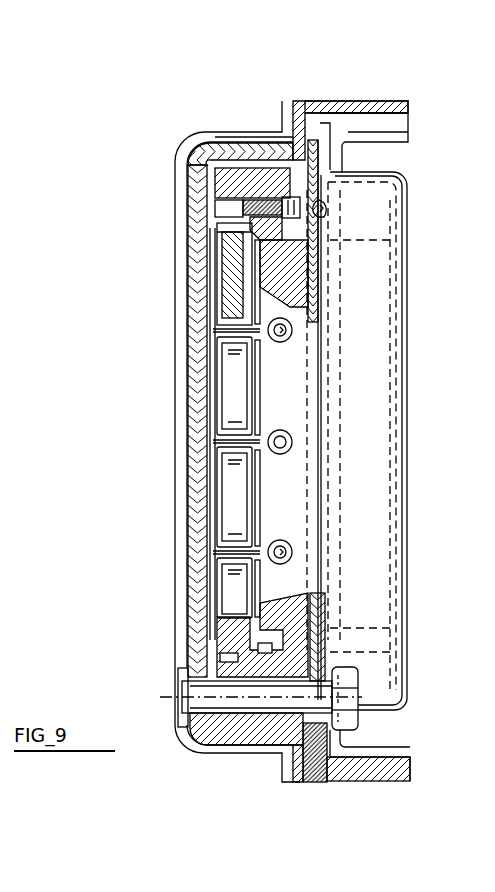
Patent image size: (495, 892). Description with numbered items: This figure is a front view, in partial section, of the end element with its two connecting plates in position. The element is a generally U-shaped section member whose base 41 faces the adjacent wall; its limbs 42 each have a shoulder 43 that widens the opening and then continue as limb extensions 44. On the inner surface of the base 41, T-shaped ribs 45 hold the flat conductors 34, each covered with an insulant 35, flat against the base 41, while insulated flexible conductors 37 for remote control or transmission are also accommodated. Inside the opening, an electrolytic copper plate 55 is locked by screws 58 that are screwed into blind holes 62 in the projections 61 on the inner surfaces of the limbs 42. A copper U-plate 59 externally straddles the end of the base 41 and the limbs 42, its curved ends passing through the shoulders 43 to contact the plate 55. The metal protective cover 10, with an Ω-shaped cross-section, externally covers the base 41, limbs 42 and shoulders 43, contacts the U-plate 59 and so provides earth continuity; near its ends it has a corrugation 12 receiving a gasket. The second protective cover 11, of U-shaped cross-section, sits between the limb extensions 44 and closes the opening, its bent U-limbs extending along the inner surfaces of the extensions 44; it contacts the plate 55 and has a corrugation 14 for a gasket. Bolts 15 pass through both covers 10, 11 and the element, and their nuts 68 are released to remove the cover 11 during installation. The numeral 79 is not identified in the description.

The protective cover 10 is at (297, 101).
The protective cover 11 is at (377, 143).
The corrugation 12 is at (287, 118).
The corrugation 14 is at (370, 119).
The bolt 15 is at (178, 690).
The flat conductor 34 is at (232, 398).
The insulant 35 is at (220, 372).
The flexible conductor 37 is at (290, 330).
The base 41 is at (215, 270).
The limb 42 is at (227, 140).
The shoulder 43 is at (285, 765).
The limb extension 44 is at (393, 101).
The T-shaped rib 45 is at (215, 333).
The electrolytic copper plate 55 is at (300, 258).
The screw 58 is at (323, 215).
The U-plate 59 is at (250, 150).
The projection 61 is at (240, 152).
The blind hole 62 is at (213, 190).
The nut 68 is at (350, 690).
The pin 79 is at (292, 338).